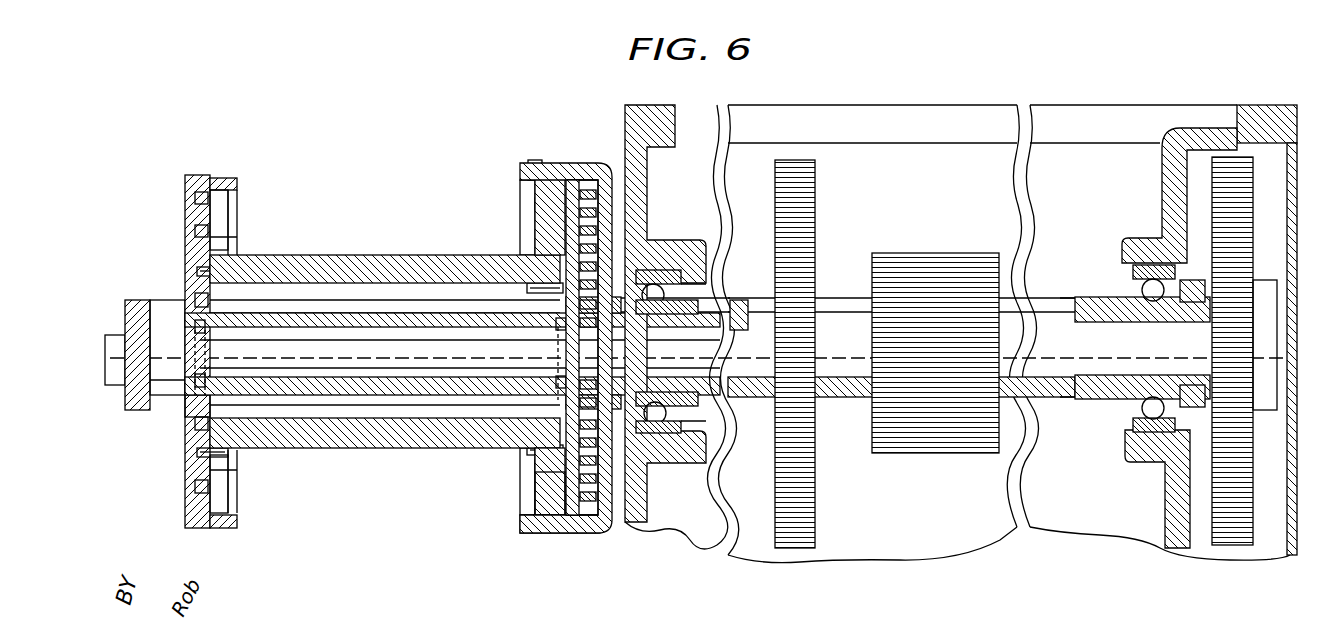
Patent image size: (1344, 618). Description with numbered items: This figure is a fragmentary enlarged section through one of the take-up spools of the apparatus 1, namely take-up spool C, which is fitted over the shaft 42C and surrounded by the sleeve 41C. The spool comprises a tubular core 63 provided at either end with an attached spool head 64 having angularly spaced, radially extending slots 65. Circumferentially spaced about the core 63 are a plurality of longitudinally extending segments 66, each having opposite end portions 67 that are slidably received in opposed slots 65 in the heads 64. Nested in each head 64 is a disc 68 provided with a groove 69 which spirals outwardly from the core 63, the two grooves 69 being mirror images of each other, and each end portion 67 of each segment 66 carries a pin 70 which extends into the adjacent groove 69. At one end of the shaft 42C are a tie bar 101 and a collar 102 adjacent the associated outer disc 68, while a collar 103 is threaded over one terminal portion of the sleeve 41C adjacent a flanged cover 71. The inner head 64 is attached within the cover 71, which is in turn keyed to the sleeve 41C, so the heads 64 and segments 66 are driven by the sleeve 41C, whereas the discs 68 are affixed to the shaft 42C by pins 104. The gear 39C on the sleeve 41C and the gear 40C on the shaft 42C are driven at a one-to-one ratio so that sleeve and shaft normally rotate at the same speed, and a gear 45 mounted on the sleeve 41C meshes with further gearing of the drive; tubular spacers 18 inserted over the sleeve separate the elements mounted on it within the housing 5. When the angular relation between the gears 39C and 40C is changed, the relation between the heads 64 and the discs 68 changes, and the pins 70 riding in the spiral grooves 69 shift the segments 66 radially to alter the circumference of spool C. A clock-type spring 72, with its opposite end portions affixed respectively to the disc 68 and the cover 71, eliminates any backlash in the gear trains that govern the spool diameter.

The clutch assembly 1 is at (610, 93).
The housing 5 is at (646, 112).
The tubular spacer 18 is at (741, 305).
The gear 39C is at (794, 165).
The gear 40C is at (1233, 548).
The sleeve 41C is at (692, 333).
The shaft 42C is at (452, 354).
The gear 45 is at (905, 255).
The tubular core 63 is at (330, 316).
The spool head 64 is at (195, 522).
The slot 65 is at (226, 494).
The segment 66 is at (403, 260).
The end portion 67 is at (213, 238).
The disc 68 is at (192, 440).
The groove 69 is at (200, 490).
The pin 70 is at (195, 273).
The flanged cover 71 is at (576, 170).
The clock-type spring 72 is at (572, 211).
The tie bar 101 is at (133, 302).
The collar 102 is at (163, 305).
The collar 103 is at (593, 353).
The pin 104 is at (207, 338).
The take-up spool C is at (347, 252).